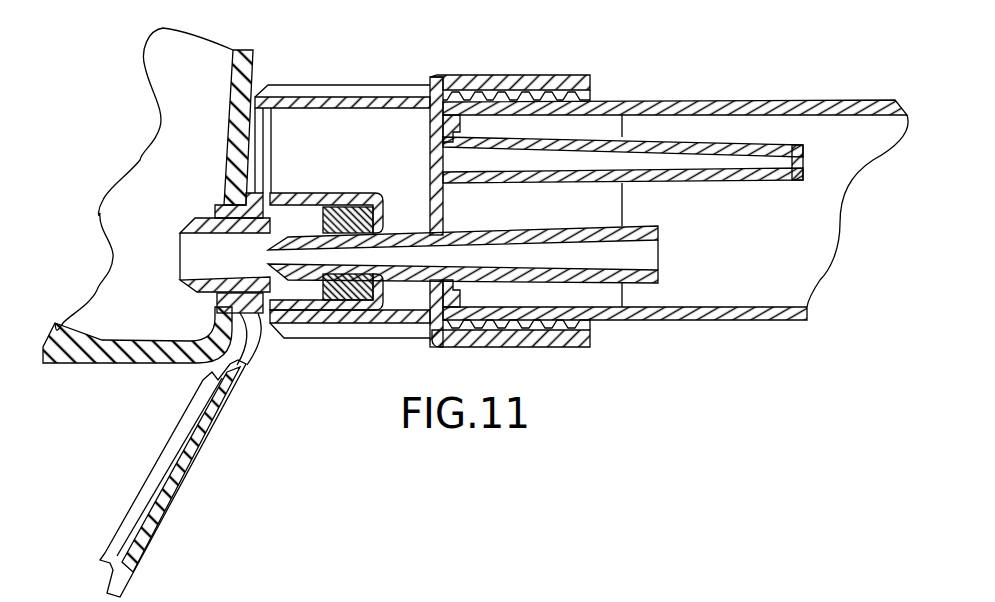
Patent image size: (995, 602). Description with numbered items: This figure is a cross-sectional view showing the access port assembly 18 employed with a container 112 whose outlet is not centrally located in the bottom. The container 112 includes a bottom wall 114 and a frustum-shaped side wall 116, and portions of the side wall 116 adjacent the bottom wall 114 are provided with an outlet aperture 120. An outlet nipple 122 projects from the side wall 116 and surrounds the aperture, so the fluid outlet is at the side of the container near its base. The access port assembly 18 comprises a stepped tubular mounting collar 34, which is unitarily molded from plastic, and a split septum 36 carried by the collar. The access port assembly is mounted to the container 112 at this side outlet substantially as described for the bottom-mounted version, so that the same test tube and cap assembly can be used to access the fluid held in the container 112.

The access port assembly 18 is at (360, 186).
The mounting collar 34 is at (308, 193).
The split septum 36 is at (360, 305).
The container 112 is at (266, 63).
The bottom wall 114 is at (70, 345).
The side wall 116 is at (218, 98).
The outlet aperture 120 is at (243, 277).
The outlet nipple 122 is at (238, 313).